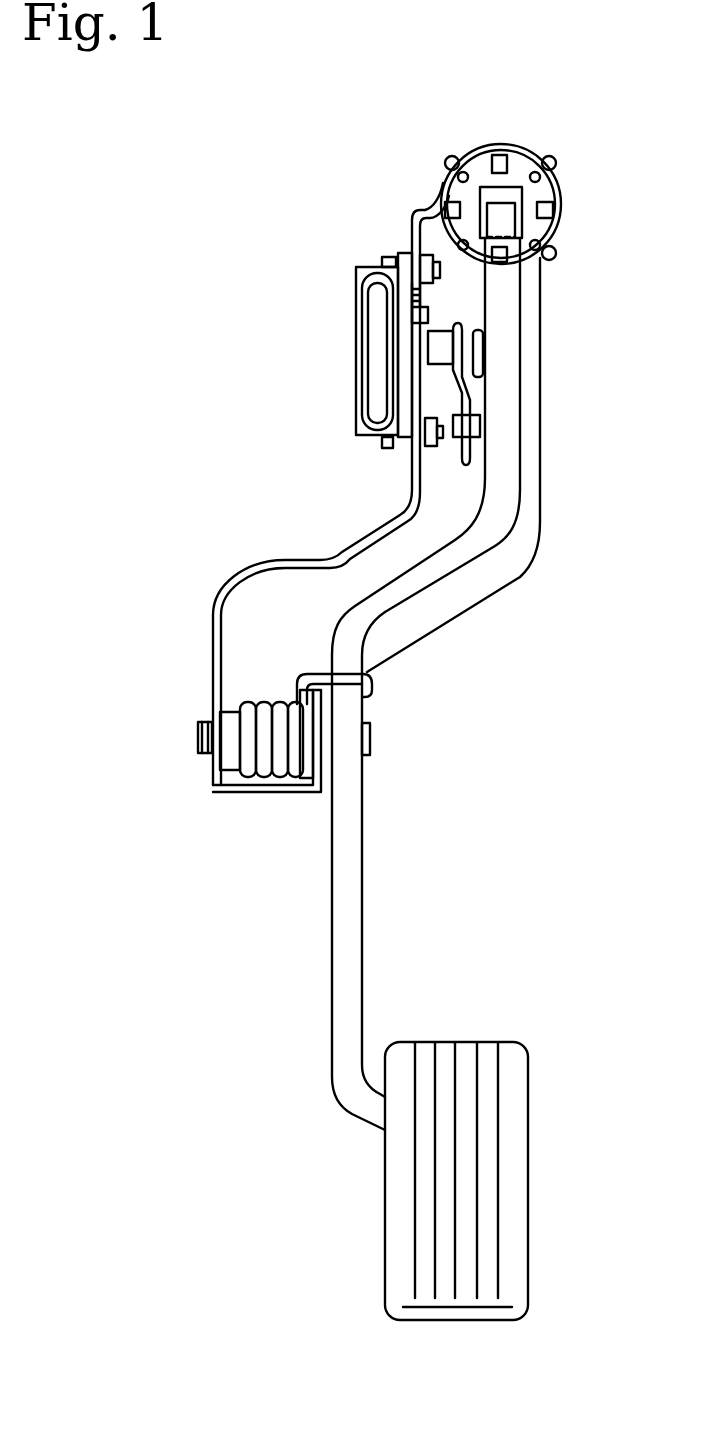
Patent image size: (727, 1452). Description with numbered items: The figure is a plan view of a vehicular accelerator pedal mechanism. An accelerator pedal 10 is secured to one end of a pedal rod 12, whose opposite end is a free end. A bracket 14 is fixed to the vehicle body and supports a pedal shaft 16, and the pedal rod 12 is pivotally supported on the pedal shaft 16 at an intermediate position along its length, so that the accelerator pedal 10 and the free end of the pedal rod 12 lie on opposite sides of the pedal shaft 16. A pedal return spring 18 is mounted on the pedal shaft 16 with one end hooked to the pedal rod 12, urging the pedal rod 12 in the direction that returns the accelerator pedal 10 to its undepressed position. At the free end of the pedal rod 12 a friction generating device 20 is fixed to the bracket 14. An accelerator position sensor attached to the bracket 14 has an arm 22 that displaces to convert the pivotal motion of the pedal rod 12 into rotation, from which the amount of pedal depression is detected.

The accelerator pedal 10 is at (512, 1137).
The pedal rod 12 is at (500, 467).
The bracket 14 is at (353, 541).
The pedal shaft 16 is at (235, 742).
The pedal return spring 18 is at (350, 678).
The friction generating device 20 is at (535, 198).
The arm 22 is at (465, 327).